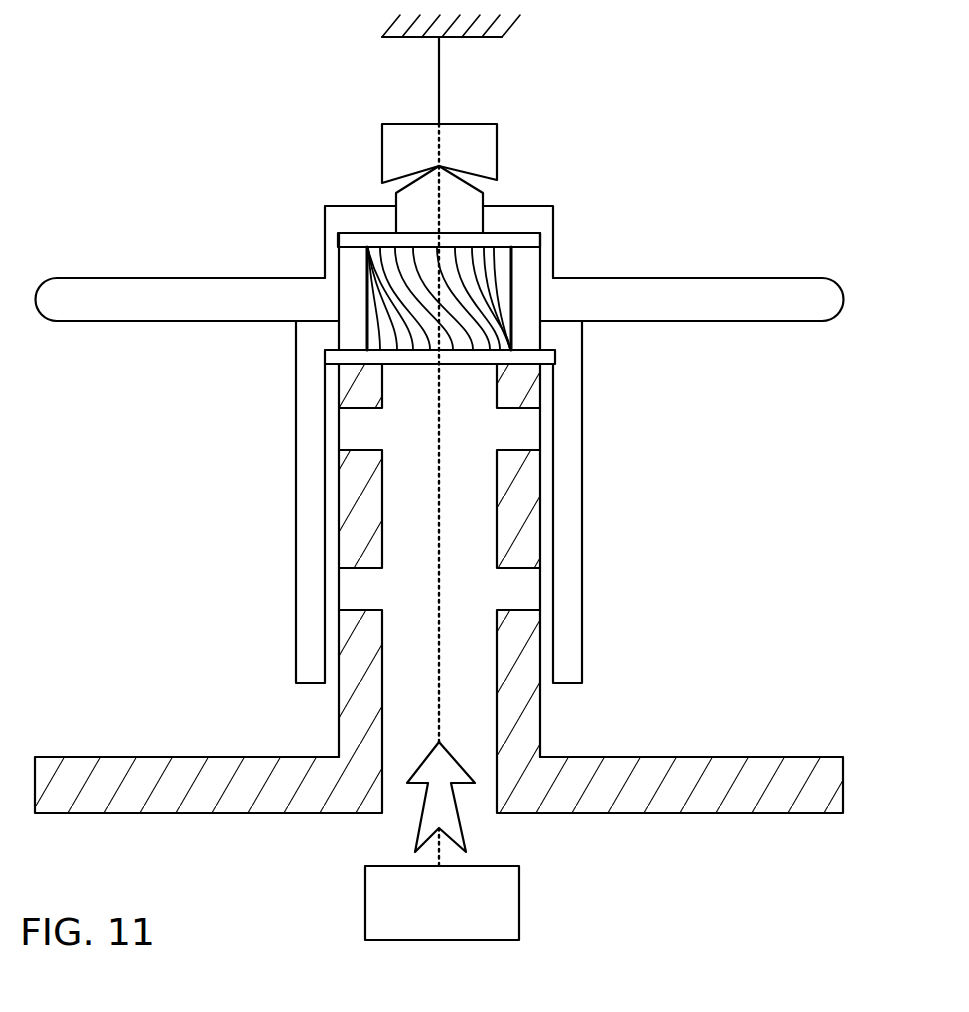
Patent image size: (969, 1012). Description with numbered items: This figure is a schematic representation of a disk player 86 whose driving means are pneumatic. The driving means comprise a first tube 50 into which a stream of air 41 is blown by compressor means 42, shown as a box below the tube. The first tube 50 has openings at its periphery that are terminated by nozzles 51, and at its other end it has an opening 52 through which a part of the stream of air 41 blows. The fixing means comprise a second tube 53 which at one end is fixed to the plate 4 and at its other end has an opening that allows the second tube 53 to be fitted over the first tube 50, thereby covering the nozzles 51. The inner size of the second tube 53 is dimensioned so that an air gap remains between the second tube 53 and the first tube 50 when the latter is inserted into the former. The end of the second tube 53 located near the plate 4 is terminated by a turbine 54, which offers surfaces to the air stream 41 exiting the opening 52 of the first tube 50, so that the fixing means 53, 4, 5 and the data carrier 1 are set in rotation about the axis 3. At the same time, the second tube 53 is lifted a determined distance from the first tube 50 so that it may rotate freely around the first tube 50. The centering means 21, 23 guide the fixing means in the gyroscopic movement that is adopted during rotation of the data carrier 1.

The data carrier 1 is at (793, 292).
The axis of rotation 3 is at (437, 603).
The plate 4 is at (532, 215).
The fixing means element 5 is at (457, 197).
The centering means 21 is at (399, 152).
The centering means 23 is at (439, 69).
The stream of air 41 is at (378, 824).
The compressor means 42 is at (442, 903).
The first tube 50 is at (520, 709).
The nozzle 51 is at (525, 428).
The opening 52 is at (527, 348).
The second tube 53 is at (308, 374).
The turbine 54 is at (393, 276).
The disk player 86 is at (500, 33).